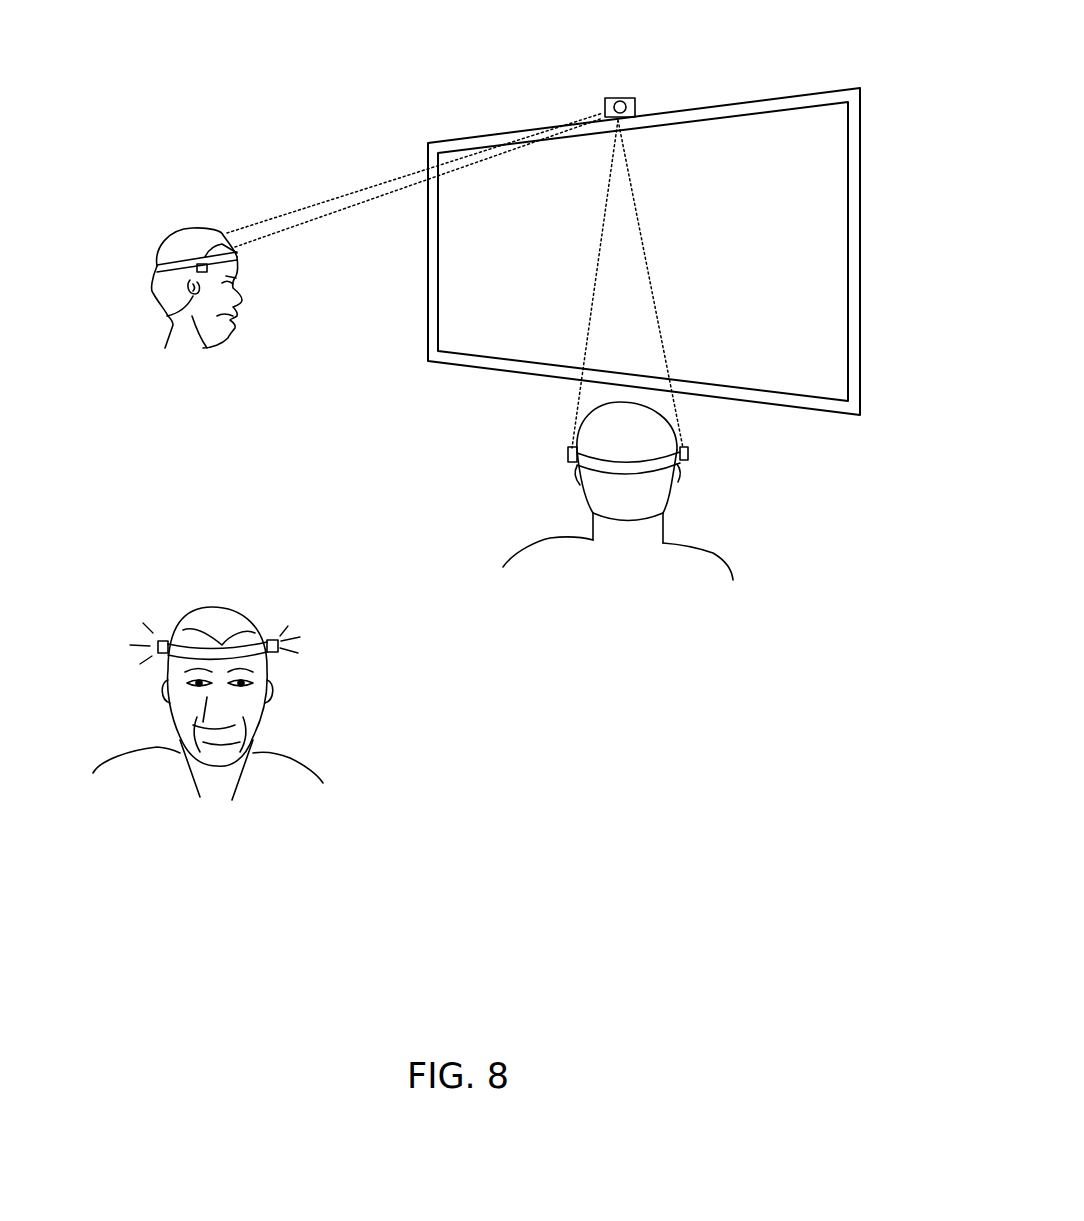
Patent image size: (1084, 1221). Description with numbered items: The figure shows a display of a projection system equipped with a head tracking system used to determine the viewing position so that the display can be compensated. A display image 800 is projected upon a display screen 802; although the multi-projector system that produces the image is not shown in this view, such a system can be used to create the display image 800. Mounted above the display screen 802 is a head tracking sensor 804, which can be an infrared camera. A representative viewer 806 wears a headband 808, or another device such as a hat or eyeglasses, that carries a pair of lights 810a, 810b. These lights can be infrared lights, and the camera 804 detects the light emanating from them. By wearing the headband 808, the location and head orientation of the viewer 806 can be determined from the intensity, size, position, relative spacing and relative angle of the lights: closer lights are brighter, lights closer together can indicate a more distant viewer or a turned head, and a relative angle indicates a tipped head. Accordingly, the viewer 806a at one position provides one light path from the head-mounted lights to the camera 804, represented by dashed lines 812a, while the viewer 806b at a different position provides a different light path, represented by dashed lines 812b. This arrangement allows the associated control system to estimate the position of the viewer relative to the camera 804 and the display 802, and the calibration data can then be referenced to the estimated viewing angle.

The display image 800 is at (492, 313).
The display screen 802 is at (490, 372).
The head tracking sensor 804 is at (628, 97).
The viewer 806 is at (205, 596).
The viewer 806a is at (170, 218).
The viewer 806b is at (680, 518).
The headband 808 is at (222, 645).
The light 810a is at (158, 638).
The light 810b is at (273, 650).
The dashed lines 812a is at (358, 205).
The dashed lines 812b is at (655, 287).